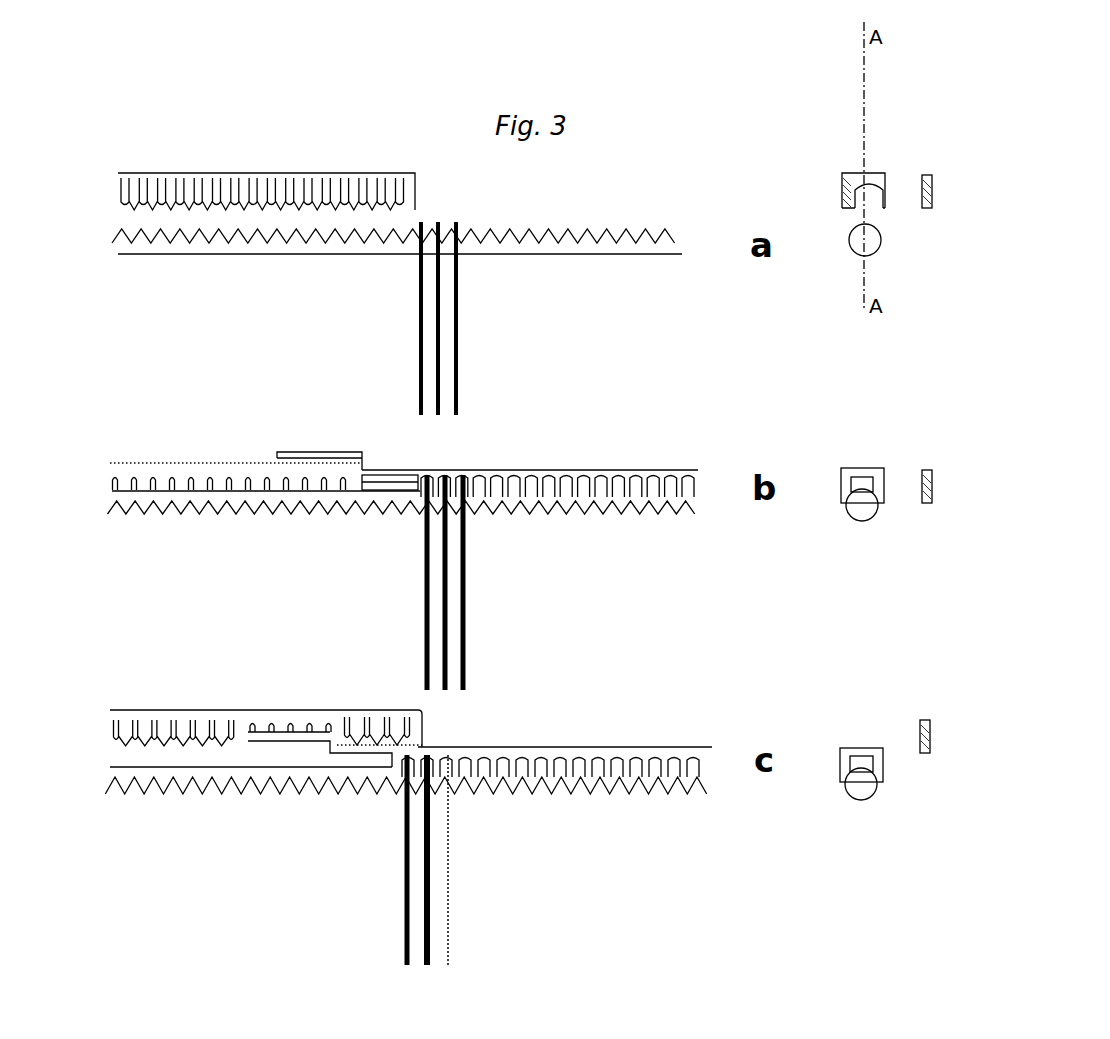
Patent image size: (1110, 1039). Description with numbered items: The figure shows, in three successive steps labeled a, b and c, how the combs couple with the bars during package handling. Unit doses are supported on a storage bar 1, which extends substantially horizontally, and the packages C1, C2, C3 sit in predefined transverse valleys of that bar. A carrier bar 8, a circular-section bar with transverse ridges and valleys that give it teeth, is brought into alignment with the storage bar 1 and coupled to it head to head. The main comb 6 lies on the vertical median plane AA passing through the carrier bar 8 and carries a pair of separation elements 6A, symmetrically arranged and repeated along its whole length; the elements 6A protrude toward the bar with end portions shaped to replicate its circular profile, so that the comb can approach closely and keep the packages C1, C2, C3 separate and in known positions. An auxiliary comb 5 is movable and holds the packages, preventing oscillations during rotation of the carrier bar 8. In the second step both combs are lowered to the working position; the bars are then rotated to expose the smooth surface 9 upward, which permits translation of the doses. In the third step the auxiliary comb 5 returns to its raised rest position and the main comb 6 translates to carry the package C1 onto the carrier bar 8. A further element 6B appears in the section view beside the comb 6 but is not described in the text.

The storage bar 1 is at (655, 245).
The auxiliary comb 5 is at (118, 207).
The main comb 6 is at (355, 187).
The separation elements 6A is at (852, 182).
The needle shank 6B is at (881, 208).
The carrier bar 8 is at (183, 250).
The smooth surface 9 is at (307, 253).
The package C1 is at (422, 352).
The package C2 is at (438, 397).
The package C3 is at (458, 348).